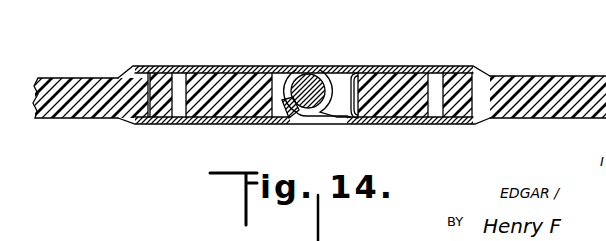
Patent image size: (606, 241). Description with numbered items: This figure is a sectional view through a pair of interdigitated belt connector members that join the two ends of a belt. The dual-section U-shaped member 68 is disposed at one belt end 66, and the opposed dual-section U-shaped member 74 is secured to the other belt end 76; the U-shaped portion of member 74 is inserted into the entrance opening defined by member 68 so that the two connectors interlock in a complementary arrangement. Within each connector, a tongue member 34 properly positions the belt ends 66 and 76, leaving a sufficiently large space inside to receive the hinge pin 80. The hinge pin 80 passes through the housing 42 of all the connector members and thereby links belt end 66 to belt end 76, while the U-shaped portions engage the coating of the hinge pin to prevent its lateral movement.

The belt end 66 is at (78, 78).
The dual-section U-shaped member 68 is at (228, 66).
The hinge pin 80 is at (310, 72).
The housing 42 is at (288, 111).
The tongue member 34 is at (353, 78).
The dual-section U-shaped member 74 is at (398, 66).
The belt end 76 is at (528, 76).